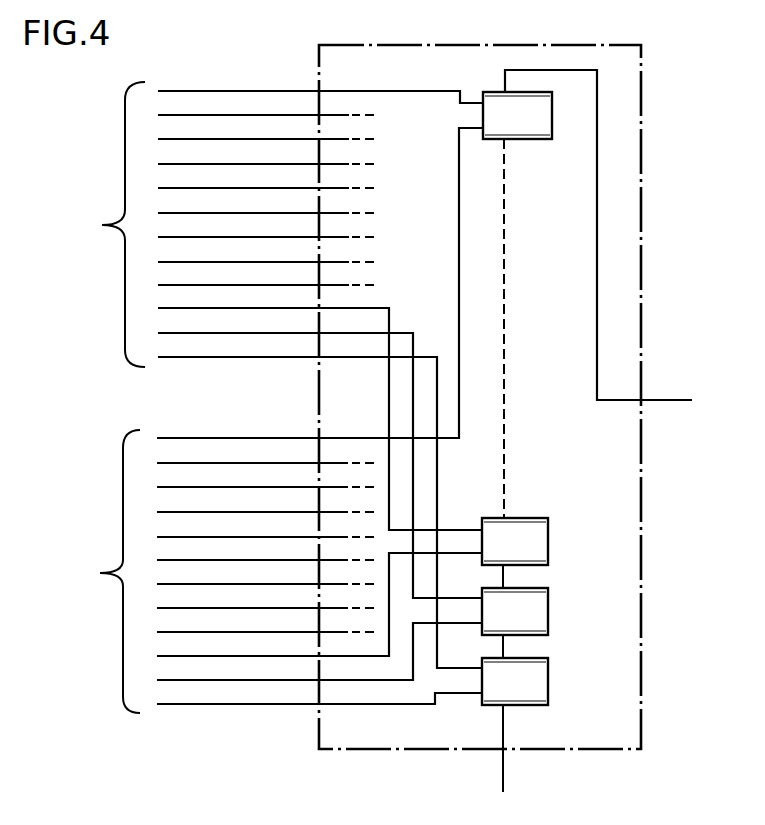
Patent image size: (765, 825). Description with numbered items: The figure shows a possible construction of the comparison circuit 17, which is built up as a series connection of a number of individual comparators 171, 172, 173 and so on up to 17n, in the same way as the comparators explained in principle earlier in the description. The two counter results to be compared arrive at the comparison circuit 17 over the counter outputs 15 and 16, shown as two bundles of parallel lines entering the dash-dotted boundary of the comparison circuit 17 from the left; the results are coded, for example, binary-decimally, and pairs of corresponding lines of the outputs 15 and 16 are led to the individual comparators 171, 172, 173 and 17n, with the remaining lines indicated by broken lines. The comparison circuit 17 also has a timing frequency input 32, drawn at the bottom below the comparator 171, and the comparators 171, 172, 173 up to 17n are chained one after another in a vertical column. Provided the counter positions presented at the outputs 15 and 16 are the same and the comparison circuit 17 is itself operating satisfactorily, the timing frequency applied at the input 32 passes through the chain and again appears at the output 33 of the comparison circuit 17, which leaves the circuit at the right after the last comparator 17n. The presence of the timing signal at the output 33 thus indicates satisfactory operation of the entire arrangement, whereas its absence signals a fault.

The output 15 is at (271, 375).
The output 16 is at (273, 420).
The comparison circuit 17 is at (645, 281).
The comparator 17n is at (518, 140).
The comparator 173 is at (538, 540).
The comparator 172 is at (538, 614).
The comparator 171 is at (538, 684).
The timing frequency input 32 is at (503, 775).
The output 33 is at (671, 402).